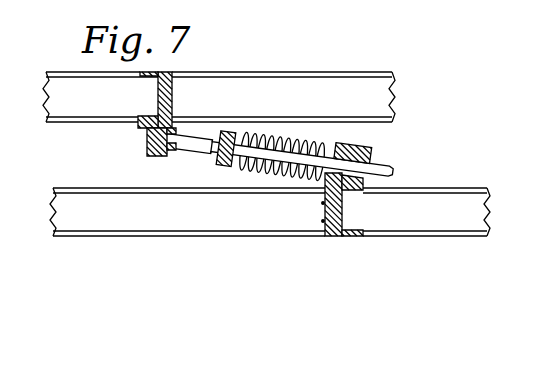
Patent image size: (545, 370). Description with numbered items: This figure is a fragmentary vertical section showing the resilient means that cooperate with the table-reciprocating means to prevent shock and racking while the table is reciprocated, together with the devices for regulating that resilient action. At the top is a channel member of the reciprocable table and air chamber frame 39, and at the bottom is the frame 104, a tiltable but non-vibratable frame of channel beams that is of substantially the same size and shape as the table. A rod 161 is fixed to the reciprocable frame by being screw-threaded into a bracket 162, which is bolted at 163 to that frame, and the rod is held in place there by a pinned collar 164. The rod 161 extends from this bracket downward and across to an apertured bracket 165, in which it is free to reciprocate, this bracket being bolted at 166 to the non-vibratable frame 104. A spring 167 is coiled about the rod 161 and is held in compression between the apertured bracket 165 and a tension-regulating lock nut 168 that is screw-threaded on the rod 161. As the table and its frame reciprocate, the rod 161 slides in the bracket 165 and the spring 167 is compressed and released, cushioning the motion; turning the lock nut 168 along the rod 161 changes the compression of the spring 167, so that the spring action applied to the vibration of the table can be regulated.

The frame member 39 is at (298, 71).
The frame 104 is at (184, 237).
The rod 161 is at (386, 169).
The bracket 162 is at (146, 147).
The bolt 163 is at (174, 98).
The pinned collar 164 is at (166, 158).
The apertured bracket 165 is at (359, 146).
The bolt 166 is at (322, 196).
The spring 167 is at (289, 150).
The tension-regulating lock nut 168 is at (223, 166).